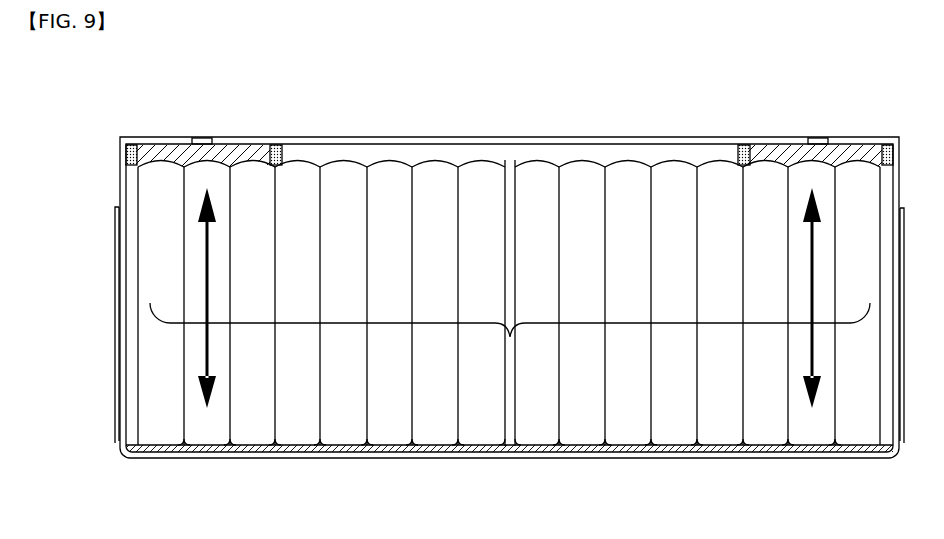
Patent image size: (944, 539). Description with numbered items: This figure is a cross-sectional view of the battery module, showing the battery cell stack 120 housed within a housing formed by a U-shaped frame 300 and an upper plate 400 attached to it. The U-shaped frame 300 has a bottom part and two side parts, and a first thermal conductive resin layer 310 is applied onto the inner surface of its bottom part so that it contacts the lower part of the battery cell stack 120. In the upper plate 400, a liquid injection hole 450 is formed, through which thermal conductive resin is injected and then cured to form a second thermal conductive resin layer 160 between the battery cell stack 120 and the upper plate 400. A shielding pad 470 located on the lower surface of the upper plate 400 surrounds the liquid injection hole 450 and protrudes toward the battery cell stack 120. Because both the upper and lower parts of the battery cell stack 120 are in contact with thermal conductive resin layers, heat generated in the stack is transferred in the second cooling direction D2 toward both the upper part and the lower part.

The battery cell stack 120 is at (510, 338).
The second thermal conductive resin layer 160 is at (242, 147).
The U-shaped frame 300 is at (120, 323).
The first thermal conductive resin layer 310 is at (322, 446).
The upper plate 400 is at (348, 137).
The liquid injection hole 450 is at (201, 139).
The shielding pad 470 is at (233, 177).
The second cooling direction D2 is at (209, 340).